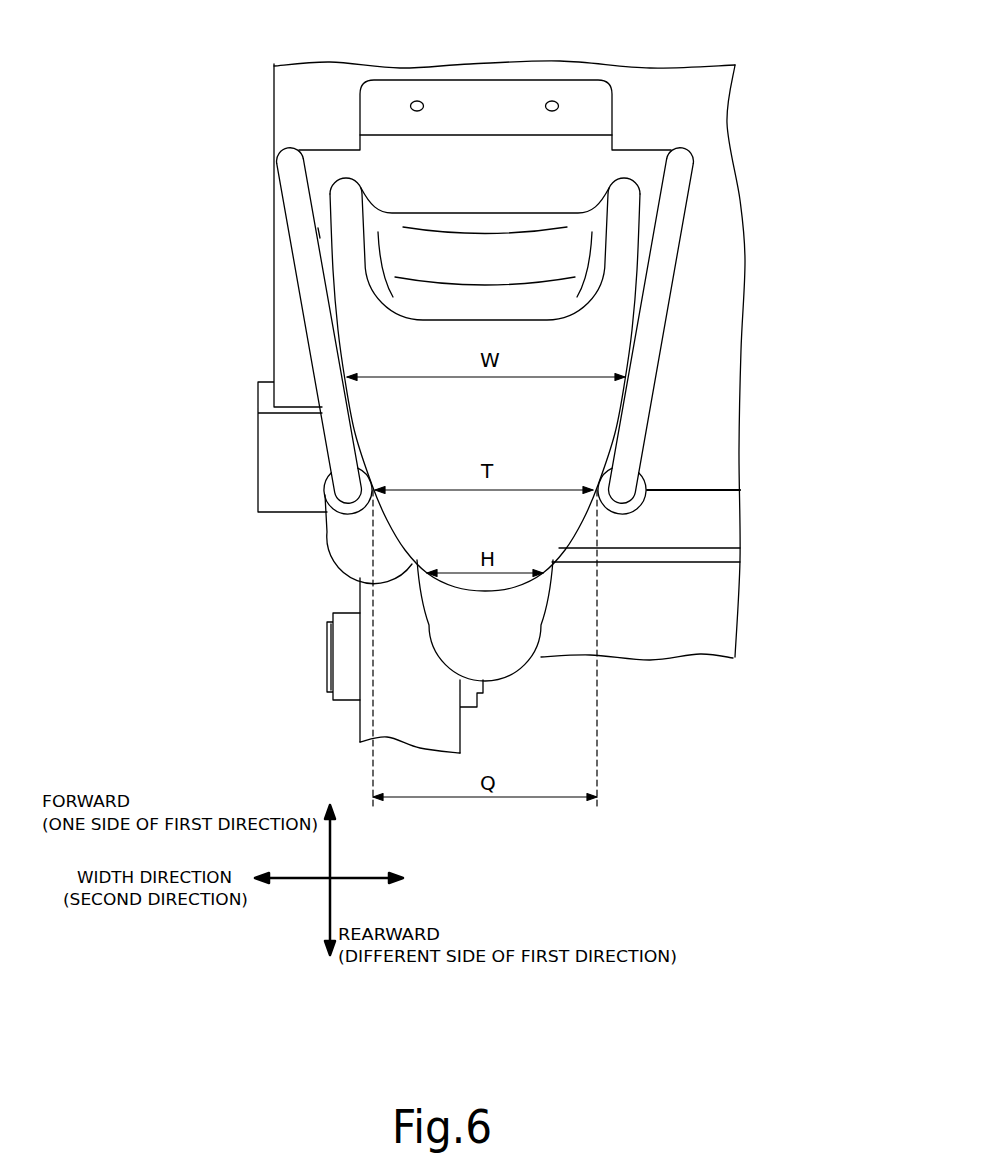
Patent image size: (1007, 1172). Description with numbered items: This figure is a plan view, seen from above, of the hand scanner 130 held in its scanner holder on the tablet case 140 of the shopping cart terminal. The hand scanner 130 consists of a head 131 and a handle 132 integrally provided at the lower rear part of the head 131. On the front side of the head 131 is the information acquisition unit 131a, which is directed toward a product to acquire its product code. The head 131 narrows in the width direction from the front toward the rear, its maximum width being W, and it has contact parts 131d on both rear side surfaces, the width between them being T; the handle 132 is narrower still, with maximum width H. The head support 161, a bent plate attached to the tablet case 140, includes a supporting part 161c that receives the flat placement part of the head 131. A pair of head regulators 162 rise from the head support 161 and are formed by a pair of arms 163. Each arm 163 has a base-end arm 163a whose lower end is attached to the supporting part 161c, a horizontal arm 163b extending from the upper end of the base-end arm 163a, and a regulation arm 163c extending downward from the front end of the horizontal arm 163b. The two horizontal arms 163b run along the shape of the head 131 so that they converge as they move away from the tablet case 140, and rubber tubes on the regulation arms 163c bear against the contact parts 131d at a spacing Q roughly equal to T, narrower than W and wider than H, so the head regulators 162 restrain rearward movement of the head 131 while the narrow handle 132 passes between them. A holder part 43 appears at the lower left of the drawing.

The tablet case 140 is at (698, 128).
The head support 161 is at (438, 153).
The supporting part 161c is at (322, 233).
The head 131 is at (400, 438).
The hand scanner 130 is at (507, 337).
The information acquisition unit 131a is at (543, 300).
The contact parts 131d is at (382, 515).
The handle 132 is at (507, 655).
The holder 43 is at (398, 722).
The regulation arm 163c is at (620, 485).
The arms 163 is at (517, 264).
The head regulators 162 is at (318, 313).
The horizontal arm 163b is at (655, 302).
The base-end arm 163a is at (293, 163).